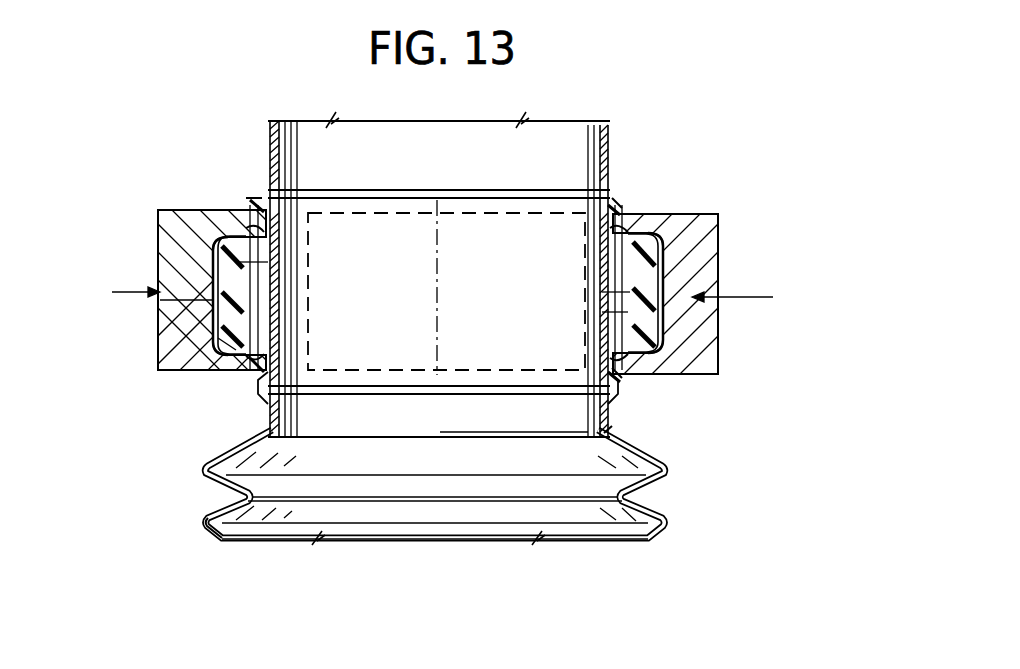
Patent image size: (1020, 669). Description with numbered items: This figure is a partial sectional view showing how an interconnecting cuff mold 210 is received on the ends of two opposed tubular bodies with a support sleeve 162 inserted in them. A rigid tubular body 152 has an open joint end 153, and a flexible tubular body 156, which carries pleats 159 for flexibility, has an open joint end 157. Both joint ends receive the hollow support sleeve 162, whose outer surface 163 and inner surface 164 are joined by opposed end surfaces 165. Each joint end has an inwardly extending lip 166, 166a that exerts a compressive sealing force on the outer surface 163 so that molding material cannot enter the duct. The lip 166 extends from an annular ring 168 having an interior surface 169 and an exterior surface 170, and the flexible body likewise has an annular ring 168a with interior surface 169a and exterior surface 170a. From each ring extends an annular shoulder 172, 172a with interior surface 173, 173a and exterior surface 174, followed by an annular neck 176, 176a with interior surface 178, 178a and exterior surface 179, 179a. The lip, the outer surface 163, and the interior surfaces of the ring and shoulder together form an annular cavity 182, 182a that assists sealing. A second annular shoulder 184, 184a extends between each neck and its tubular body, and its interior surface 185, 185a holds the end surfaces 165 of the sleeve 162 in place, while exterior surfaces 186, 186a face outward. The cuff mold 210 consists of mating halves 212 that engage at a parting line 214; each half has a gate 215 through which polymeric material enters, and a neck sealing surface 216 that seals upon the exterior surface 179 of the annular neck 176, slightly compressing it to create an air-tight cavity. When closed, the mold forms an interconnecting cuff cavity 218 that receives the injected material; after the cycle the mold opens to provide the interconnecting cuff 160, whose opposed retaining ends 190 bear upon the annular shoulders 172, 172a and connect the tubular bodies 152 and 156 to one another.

The tubular body 152 is at (626, 138).
The open joint end 153 is at (607, 172).
The flexible tubular body 156 is at (672, 514).
The open joint end 157 is at (605, 430).
The pleats 159 is at (215, 517).
The interconnecting cuff 160 is at (672, 332).
The support sleeve 162 is at (460, 398).
The outer surface 163 is at (255, 263).
The inner surface 164 is at (598, 246).
The end surfaces 165 is at (517, 197).
The lip 166 is at (603, 290).
The lip 166a is at (610, 310).
The annular ring 168 is at (300, 260).
The annular ring 168a is at (275, 298).
The interior surface 169 is at (292, 246).
The interior surface 169a is at (280, 320).
The exterior surface 170 is at (213, 264).
The exterior surface 170a is at (228, 337).
The annular shoulder 172 is at (253, 233).
The annular shoulder 172a is at (245, 333).
The interior surface 173 is at (635, 258).
The interior surface 173a is at (640, 325).
The exterior surface 174 is at (250, 265).
The annular neck 176 is at (250, 198).
The annular neck 176a is at (627, 380).
The interior surface 178 is at (300, 203).
The interior surface 178a is at (439, 410).
The exterior surface 179 is at (255, 200).
The exterior surface 179a is at (255, 362).
The annular cavity 182 is at (612, 270).
The annular cavity 182a is at (616, 322).
The second annular shoulder 184 is at (340, 153).
The second annular shoulder 184a is at (252, 406).
The interior surface 185 is at (567, 200).
The interior surface 185a is at (400, 392).
The exterior surface 186 is at (264, 200).
The exterior surface 186a is at (608, 407).
The retaining ends 190 is at (647, 217).
The interconnecting cuff mold 210 is at (738, 233).
The mating halves 212 is at (165, 225).
The parting line 214 is at (440, 245).
The gate 215 is at (190, 297).
The neck sealing surface 216 is at (620, 217).
The interconnecting cuff cavity 218 is at (230, 300).